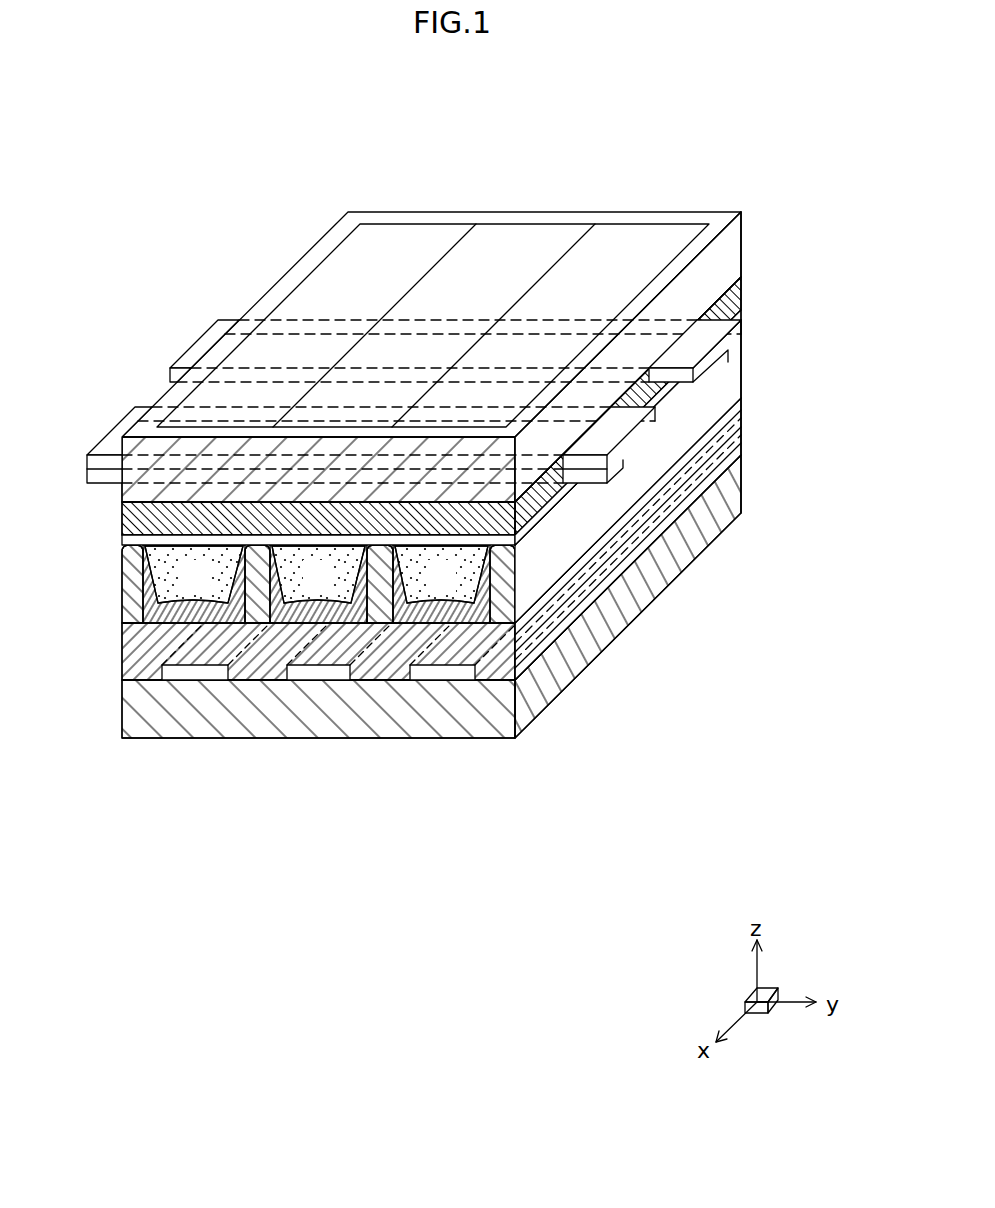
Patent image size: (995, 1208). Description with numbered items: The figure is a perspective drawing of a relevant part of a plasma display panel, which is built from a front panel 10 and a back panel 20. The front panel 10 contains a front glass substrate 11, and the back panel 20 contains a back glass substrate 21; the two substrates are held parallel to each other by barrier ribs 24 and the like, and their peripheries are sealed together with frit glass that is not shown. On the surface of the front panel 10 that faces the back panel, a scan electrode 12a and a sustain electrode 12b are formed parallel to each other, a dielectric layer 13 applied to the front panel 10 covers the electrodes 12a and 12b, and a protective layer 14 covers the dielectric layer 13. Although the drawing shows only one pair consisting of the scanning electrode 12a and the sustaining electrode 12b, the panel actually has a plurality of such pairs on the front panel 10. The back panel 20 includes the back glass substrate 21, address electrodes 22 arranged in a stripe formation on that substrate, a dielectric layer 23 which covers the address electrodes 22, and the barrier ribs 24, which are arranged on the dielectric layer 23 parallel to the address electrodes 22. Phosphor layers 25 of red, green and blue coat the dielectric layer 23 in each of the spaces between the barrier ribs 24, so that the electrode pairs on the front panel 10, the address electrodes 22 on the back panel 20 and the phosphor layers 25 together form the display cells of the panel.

The front panel 10 is at (501, 114).
The front glass substrate 11 is at (738, 257).
The scan electrode 12a is at (713, 369).
The sustain electrode 12b is at (643, 437).
The dielectric layer 13 is at (122, 505).
The protective layer 14 is at (122, 541).
The back panel 20 is at (413, 822).
The back glass substrate 21 is at (677, 572).
The address electrodes 22 is at (440, 672).
The dielectric layer 23 is at (738, 448).
The barrier ribs 24 is at (122, 586).
The phosphor layers 25 is at (195, 588).